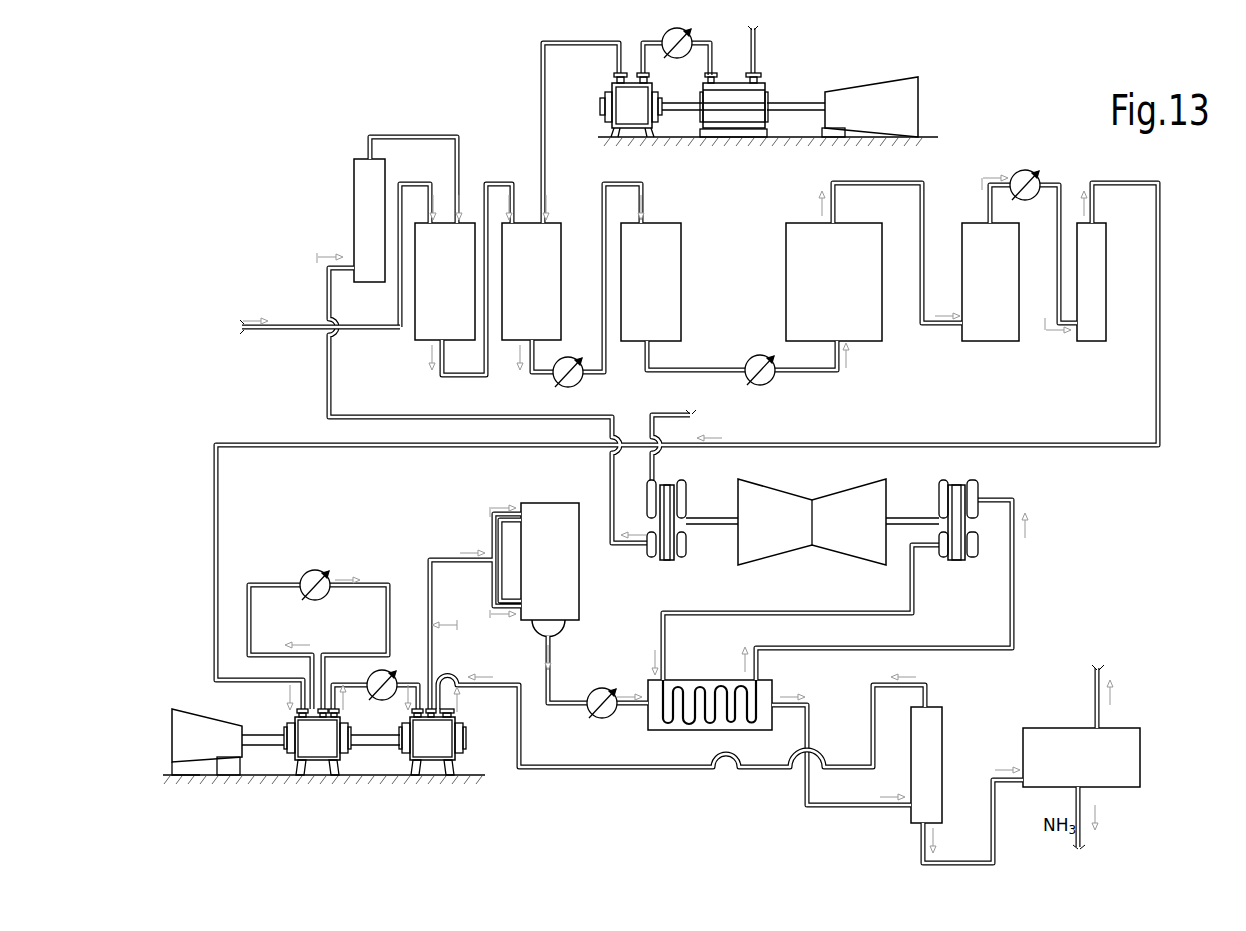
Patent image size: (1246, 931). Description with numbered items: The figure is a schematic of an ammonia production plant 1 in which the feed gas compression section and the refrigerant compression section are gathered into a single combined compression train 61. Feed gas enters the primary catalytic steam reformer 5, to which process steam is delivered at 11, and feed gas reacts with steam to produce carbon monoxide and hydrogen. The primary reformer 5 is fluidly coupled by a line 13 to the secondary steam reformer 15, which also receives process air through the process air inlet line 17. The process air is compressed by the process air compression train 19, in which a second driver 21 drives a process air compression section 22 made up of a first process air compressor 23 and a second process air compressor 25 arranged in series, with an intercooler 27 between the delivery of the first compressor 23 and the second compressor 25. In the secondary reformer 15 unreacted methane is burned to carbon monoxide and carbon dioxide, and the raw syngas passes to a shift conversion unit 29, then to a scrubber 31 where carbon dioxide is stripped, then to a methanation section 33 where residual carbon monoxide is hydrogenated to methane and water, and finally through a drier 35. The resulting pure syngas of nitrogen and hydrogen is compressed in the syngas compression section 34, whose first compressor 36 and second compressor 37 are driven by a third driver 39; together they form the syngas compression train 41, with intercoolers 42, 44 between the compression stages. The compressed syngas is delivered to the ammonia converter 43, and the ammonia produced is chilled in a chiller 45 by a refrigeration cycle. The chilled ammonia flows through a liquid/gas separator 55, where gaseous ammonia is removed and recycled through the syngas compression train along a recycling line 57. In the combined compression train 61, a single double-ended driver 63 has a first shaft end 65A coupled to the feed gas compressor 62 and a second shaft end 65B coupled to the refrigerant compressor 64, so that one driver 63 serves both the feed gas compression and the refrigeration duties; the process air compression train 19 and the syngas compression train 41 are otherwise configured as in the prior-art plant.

The ammonia production plant 1 is at (248, 133).
The primary catalytic steam reformer 5 is at (437, 282).
The process steam delivery 11 is at (369, 330).
The connecting line 13 is at (470, 378).
The secondary steam reformer 15 is at (521, 282).
The process air inlet line 17 is at (543, 140).
The process air compression train 19 is at (798, 71).
The second driver 21 is at (868, 93).
The process air compression section 22 is at (694, 109).
The first process air compressor 23 is at (745, 90).
The second process air compressor 25 is at (600, 107).
The intercooler 27 is at (668, 32).
The shift conversion unit 29 is at (673, 278).
The scrubber 31 is at (793, 285).
The methanation section 33 is at (979, 280).
The syngas compression section 34 is at (375, 758).
The drier 35 is at (1097, 254).
The first compressor 36 is at (300, 728).
The second compressor 37 is at (453, 742).
The third driver 39 is at (190, 738).
The syngas compression train 41 is at (249, 790).
The intercooler 42 is at (311, 571).
The ammonia converter 43 is at (572, 604).
The intercooler 44 is at (372, 673).
The chiller 45 is at (668, 726).
The liquid/gas separator 55 is at (933, 748).
The recycling line 57 is at (718, 768).
The combined compression train 61 is at (829, 533).
The feed gas compressor 62 is at (667, 488).
The driver 63 is at (778, 500).
The refrigerant compressor 64 is at (958, 490).
The first shaft end 65A is at (707, 526).
The second shaft end 65B is at (916, 517).